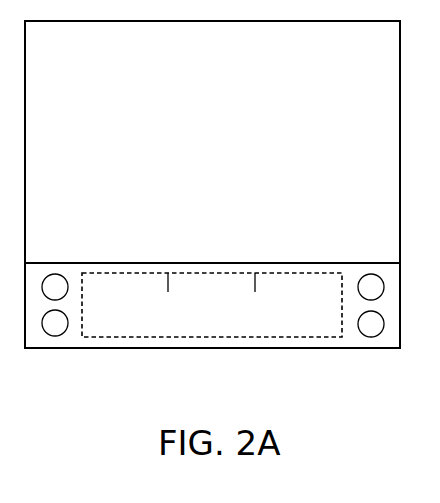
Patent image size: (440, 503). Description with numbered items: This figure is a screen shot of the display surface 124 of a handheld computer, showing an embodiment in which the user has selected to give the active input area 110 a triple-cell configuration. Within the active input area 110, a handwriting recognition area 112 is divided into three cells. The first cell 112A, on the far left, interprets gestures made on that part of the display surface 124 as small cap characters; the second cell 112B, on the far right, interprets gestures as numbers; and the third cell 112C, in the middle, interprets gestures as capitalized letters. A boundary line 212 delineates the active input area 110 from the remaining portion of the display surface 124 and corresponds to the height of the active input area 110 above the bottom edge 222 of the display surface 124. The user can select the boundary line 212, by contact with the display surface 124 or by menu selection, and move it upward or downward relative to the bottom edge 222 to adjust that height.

The active input area 110 is at (302, 252).
The display surface 124 is at (358, 72).
The boundary line 212 is at (58, 263).
The bottom edge 222 is at (80, 348).
The handwriting recognition area 112 is at (275, 268).
The first cell 112A is at (152, 332).
The second cell 112B is at (327, 332).
The third cell 112C is at (238, 332).